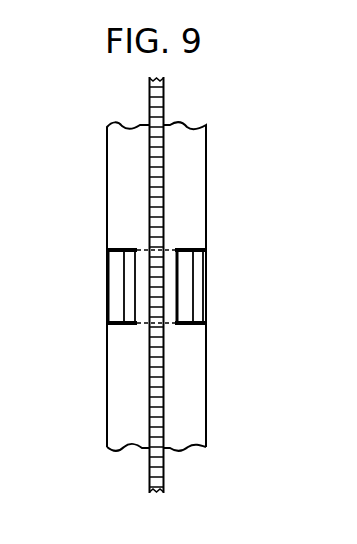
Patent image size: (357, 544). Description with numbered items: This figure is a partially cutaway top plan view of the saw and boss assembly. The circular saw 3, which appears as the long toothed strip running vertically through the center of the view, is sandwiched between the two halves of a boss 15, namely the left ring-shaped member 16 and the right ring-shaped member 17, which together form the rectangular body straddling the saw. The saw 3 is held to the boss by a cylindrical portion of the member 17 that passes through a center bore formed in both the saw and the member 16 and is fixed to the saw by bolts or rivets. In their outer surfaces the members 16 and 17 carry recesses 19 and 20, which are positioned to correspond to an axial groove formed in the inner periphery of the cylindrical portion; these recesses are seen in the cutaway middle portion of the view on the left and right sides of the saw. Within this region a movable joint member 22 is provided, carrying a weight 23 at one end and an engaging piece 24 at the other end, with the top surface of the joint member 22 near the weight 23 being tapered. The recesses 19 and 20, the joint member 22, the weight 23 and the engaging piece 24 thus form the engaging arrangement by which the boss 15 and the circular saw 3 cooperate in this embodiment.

The circular saw 3 is at (162, 110).
The boss 15 is at (212, 173).
The ring-shaped member 16 is at (106, 155).
The ring-shaped member 17 is at (197, 395).
The recess 19 is at (133, 311).
The recess 20 is at (178, 277).
The movable joint member 22 is at (106, 261).
The weight 23 is at (113, 303).
The engaging piece 24 is at (203, 300).